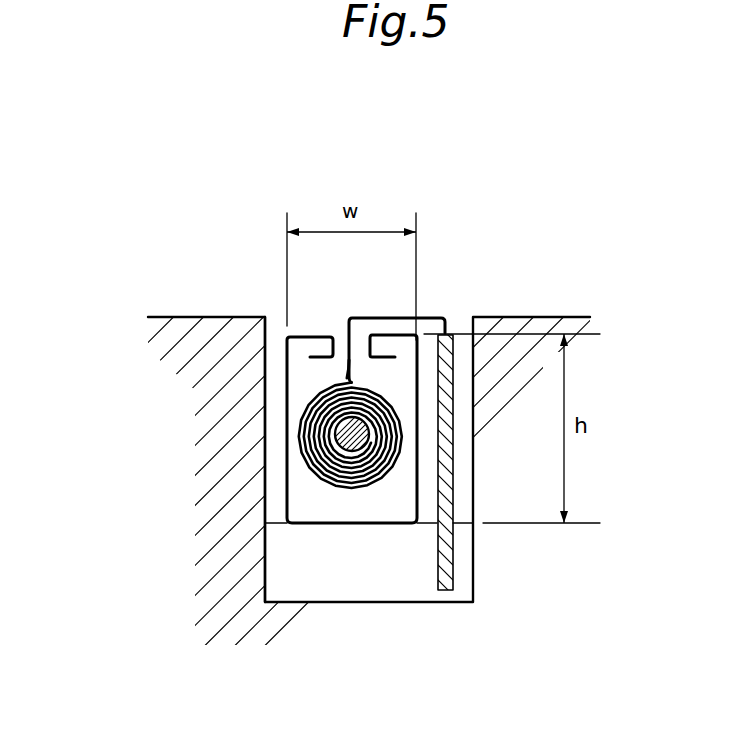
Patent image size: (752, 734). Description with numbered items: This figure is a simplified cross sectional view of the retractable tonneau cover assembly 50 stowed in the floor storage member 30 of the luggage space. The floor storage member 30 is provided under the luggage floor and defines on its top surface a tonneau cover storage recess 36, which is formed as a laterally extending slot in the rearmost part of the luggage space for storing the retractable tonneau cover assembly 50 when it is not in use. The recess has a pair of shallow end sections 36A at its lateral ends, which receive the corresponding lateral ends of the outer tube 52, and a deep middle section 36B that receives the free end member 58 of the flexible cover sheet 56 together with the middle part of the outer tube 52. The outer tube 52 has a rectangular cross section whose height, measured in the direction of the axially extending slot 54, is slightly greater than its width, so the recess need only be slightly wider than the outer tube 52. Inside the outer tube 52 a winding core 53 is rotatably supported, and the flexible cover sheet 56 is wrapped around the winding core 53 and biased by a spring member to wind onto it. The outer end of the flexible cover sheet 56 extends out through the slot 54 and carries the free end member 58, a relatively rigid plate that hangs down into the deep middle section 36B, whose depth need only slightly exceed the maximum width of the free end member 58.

The floor storage member 30 is at (538, 317).
The tonneau cover storage recess 36 is at (108, 412).
The shallow end section 36A is at (264, 425).
The deep middle section 36B is at (264, 563).
The retractable tonneau cover assembly 50 is at (418, 380).
The outer tube 52 is at (305, 337).
The winding core 53 is at (355, 446).
The slot 54 is at (338, 347).
The flexible cover sheet 56 is at (427, 318).
The free end member 58 is at (447, 558).